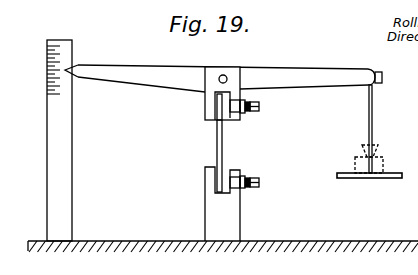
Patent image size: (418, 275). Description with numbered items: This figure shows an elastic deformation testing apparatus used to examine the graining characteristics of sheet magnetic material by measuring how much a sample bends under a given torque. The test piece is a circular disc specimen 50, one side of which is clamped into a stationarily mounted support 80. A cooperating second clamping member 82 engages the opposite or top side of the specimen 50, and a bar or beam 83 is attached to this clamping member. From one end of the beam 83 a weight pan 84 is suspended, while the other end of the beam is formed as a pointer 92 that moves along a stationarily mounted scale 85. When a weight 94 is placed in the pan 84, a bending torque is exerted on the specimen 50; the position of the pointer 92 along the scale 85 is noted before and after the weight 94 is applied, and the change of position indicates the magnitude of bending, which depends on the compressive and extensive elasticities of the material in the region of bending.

The scale 85 is at (45, 78).
The pointer 92 is at (67, 69).
The bar or beam 83 is at (297, 68).
The second clamping member 82 is at (203, 98).
The specimen 50 is at (222, 147).
The support 80 is at (240, 229).
The weight pan 84 is at (348, 172).
The weight 94 is at (383, 158).